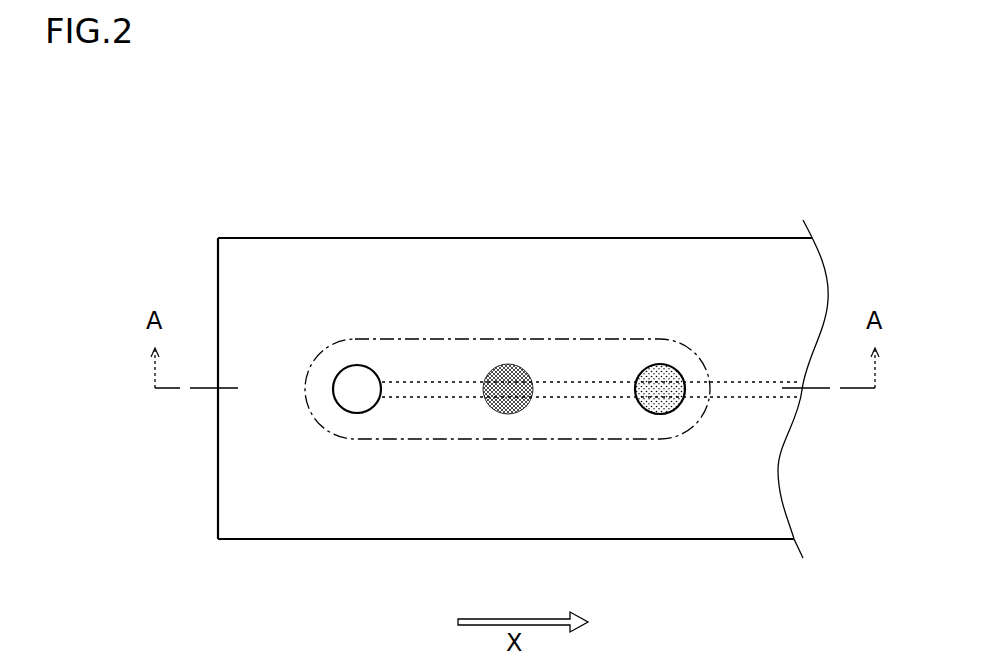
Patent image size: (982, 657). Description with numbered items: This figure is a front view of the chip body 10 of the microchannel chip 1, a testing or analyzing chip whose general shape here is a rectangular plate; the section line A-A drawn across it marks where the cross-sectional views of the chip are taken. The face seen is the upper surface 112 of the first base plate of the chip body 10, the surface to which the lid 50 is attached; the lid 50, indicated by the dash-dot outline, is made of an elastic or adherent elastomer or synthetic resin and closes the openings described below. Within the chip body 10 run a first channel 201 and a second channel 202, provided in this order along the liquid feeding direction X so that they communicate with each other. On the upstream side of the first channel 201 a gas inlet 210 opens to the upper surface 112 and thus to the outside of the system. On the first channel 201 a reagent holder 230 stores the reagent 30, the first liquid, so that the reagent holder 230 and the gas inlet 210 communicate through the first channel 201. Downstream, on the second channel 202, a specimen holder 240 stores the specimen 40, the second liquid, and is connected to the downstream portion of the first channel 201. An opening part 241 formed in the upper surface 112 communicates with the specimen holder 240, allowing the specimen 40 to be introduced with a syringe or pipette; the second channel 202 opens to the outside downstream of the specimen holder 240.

The microchannel chip 1 is at (281, 218).
The chip body 10 is at (217, 274).
The upper surface 112 is at (246, 473).
The lid 50 is at (412, 338).
The reagent 30 is at (508, 364).
The specimen 40 is at (648, 366).
The opening part 241 is at (660, 365).
The first channel 201 is at (430, 398).
The second channel 202 is at (722, 398).
The gas inlet 210 is at (357, 396).
The reagent holder 230 is at (508, 396).
The specimen holder 240 is at (660, 396).